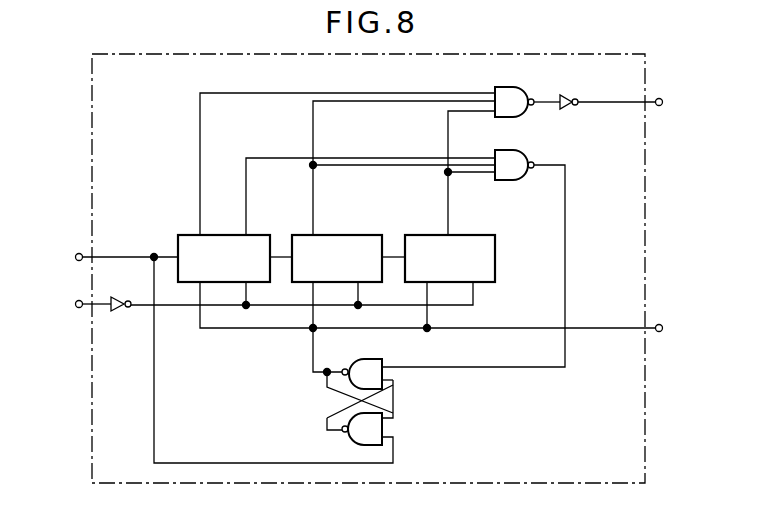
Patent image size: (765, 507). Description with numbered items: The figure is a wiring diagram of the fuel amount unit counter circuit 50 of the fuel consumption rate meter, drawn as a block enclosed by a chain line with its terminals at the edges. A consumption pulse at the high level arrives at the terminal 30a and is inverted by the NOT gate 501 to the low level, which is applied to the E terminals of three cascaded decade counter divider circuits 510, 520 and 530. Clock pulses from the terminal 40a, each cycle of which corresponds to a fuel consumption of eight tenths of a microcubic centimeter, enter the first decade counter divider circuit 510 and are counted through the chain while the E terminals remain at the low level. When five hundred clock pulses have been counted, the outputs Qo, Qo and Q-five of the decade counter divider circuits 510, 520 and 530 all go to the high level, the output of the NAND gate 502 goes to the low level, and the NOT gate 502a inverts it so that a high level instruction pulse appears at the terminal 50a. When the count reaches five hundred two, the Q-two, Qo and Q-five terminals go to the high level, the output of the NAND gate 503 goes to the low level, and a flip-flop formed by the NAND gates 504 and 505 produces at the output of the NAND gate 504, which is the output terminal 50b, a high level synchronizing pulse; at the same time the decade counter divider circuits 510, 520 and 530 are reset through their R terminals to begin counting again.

The fuel amount unit counter circuit 50 is at (646, 157).
The terminal 50a is at (663, 101).
The output terminal 50b is at (662, 326).
The terminal 40a is at (75, 257).
The terminal 30a is at (76, 305).
The NOT gate 501 is at (127, 309).
The NAND gate 502 is at (524, 87).
The NOT gate 502a is at (574, 97).
The NAND gate 503 is at (526, 142).
The NAND gate 504 is at (387, 357).
The NAND gate 505 is at (384, 428).
The decade counter divider circuit 510 is at (190, 235).
The decade counter divider circuit 520 is at (352, 235).
The decade counter divider circuit 530 is at (478, 235).